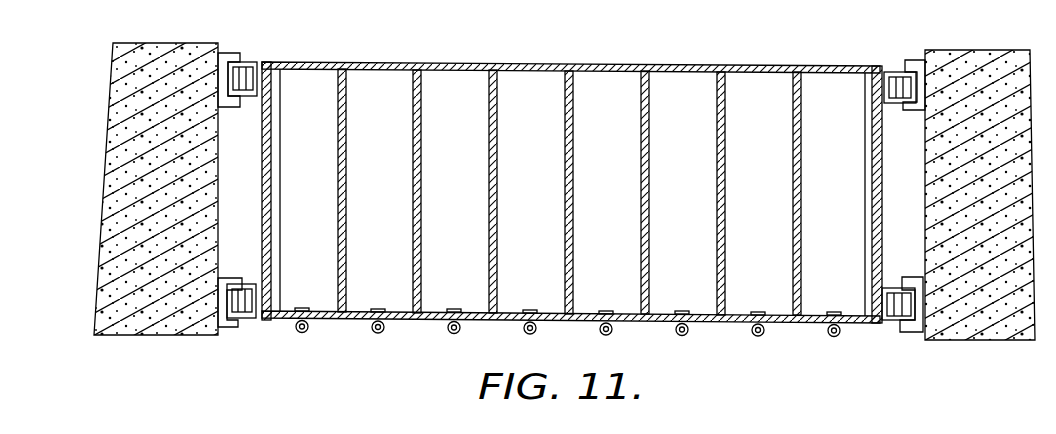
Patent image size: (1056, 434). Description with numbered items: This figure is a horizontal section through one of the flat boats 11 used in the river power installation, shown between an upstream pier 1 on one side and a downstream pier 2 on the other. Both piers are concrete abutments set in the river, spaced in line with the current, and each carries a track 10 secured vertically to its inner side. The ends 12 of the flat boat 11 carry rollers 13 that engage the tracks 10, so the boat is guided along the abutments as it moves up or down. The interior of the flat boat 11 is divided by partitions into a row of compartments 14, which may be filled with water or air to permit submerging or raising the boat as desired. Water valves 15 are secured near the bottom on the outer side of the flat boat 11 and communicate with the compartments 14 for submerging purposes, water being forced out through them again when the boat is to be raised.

The upstream pier 1 is at (140, 328).
The downstream pier 2 is at (967, 343).
The track 10 is at (232, 108).
The flat boat 11 is at (653, 335).
The end of flat boat 12 is at (259, 63).
The roller 13 is at (239, 72).
The compartment 14 is at (666, 86).
The water valve 15 is at (378, 333).